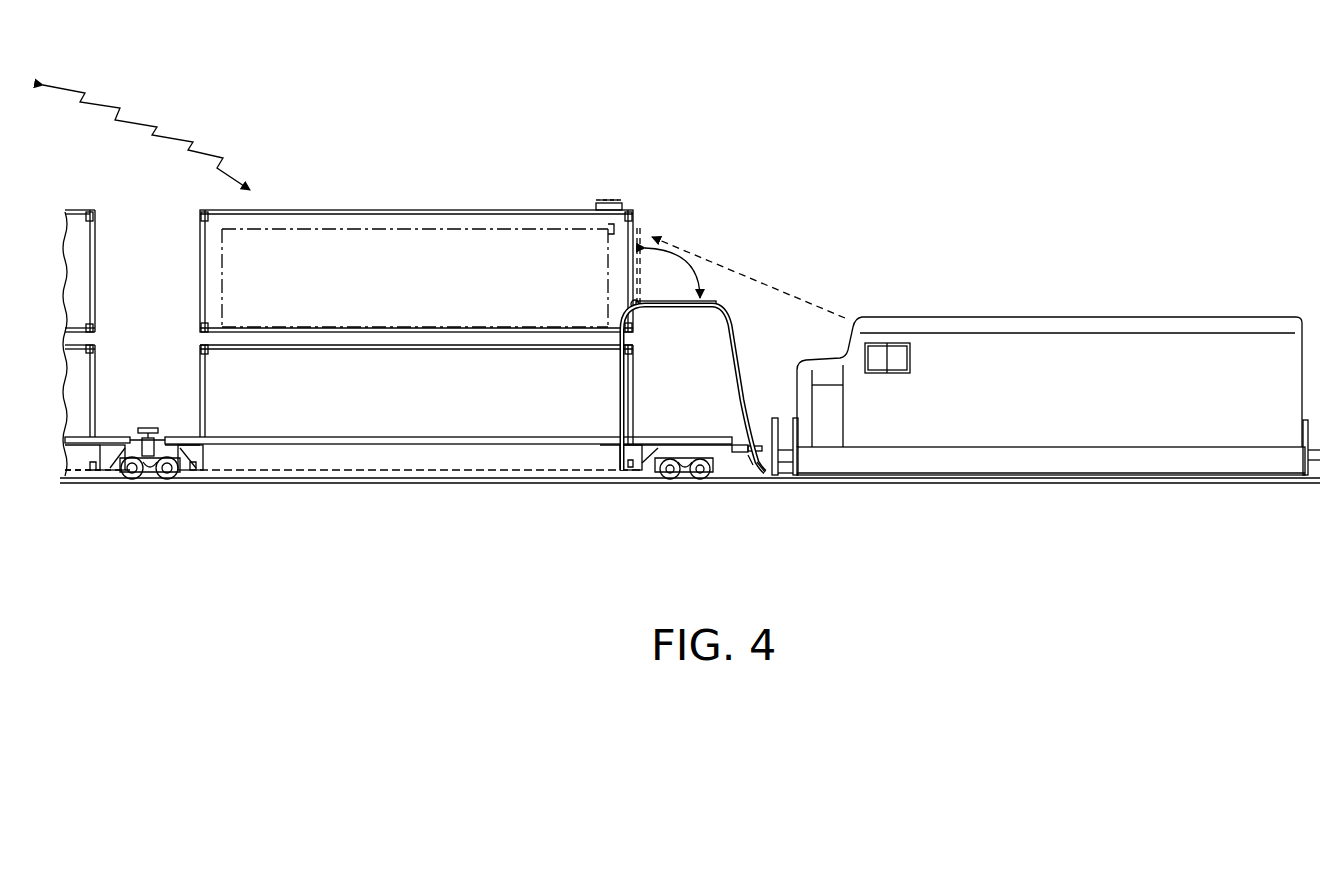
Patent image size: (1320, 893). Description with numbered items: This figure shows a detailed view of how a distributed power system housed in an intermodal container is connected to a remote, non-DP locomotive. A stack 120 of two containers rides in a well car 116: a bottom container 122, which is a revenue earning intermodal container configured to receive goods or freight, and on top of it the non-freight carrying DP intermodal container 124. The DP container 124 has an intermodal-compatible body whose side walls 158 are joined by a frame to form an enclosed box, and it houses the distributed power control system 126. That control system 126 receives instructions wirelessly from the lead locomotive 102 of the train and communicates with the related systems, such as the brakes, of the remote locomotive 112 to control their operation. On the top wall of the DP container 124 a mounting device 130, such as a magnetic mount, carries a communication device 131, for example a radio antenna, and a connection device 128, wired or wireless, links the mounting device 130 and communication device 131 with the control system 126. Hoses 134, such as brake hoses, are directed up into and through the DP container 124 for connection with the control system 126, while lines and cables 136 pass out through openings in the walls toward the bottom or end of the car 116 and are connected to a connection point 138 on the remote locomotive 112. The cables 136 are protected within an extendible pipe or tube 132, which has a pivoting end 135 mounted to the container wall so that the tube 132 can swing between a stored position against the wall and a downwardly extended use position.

The lead locomotive 102 is at (203, 148).
The remote locomotive 112 is at (1237, 305).
The well car 116 is at (195, 470).
The stack 120 is at (468, 183).
The bottom container 122 is at (198, 382).
The DP intermodal container 124 is at (198, 262).
The distributed power control system 126 is at (605, 313).
The connection device 128 is at (614, 228).
The mounting device 130 is at (610, 203).
The communication device 131 is at (600, 203).
The extendible pipe or tube 132 is at (700, 308).
The hose 134 is at (617, 398).
The pivoting end 135 is at (636, 308).
The lines and cables 136 is at (753, 467).
The connection point 138 is at (760, 465).
The side wall 158 is at (292, 228).